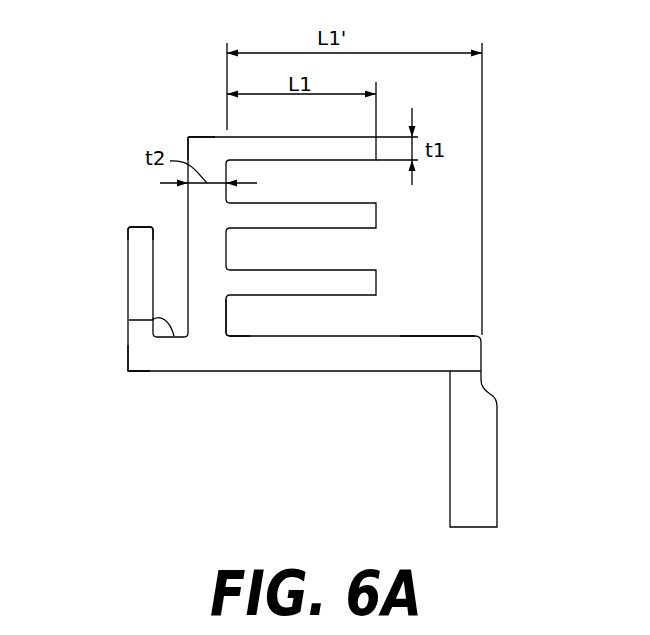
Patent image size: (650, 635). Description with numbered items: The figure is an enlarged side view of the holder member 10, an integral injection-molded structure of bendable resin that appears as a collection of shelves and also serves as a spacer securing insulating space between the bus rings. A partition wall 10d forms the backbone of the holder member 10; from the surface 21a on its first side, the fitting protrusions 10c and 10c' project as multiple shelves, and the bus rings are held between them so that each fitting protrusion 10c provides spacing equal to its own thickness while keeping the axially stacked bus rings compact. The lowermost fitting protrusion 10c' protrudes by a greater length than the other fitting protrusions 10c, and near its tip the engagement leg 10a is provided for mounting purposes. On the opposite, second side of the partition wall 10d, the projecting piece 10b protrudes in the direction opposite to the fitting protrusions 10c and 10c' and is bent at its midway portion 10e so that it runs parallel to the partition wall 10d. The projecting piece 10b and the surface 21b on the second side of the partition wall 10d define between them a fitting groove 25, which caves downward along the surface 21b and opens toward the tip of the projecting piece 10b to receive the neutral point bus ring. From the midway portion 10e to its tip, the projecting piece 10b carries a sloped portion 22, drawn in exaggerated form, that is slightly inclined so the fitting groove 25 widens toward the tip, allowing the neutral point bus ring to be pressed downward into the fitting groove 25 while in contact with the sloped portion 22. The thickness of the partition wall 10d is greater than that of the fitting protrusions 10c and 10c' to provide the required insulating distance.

The holder member 10 is at (178, 371).
The engagement leg 10a is at (483, 492).
The projecting piece 10b is at (139, 275).
The fitting protrusion 10c is at (331, 220).
The fitting protrusion 10c' is at (498, 353).
The partition wall 10d is at (205, 147).
The midway portion 10e is at (143, 352).
The surface 21a is at (226, 318).
The surface 21b is at (187, 203).
The sloped portion 22 is at (153, 247).
The fitting groove 25 is at (130, 322).